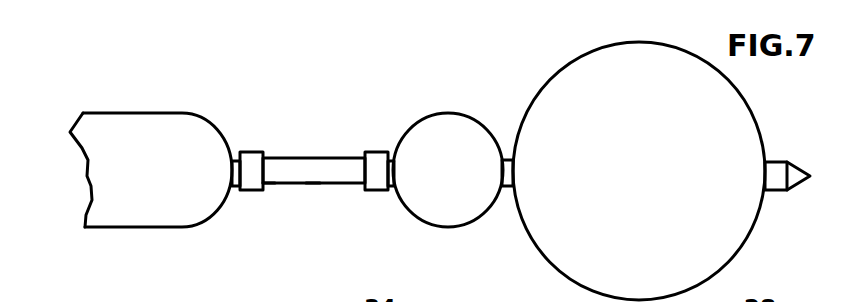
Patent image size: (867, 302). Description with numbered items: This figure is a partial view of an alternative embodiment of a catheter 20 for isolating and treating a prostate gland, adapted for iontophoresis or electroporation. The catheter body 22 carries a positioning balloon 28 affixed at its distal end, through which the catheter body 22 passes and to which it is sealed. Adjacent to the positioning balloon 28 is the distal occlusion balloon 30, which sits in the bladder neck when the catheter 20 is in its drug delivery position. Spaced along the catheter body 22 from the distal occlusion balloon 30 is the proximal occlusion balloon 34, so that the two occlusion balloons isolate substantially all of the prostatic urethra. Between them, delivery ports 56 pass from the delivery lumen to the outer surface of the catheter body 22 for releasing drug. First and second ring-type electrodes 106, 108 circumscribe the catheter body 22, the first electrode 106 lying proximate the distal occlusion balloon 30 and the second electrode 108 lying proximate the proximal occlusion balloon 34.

The catheter 20 is at (72, 171).
The proximal occlusion balloon 34 is at (173, 112).
The second electrode 108 is at (253, 151).
The catheter body 22 is at (318, 160).
The delivery ports 56 is at (263, 185).
The first electrode 106 is at (381, 154).
The distal occlusion balloon 30 is at (457, 114).
The positioning balloon 28 is at (602, 43).